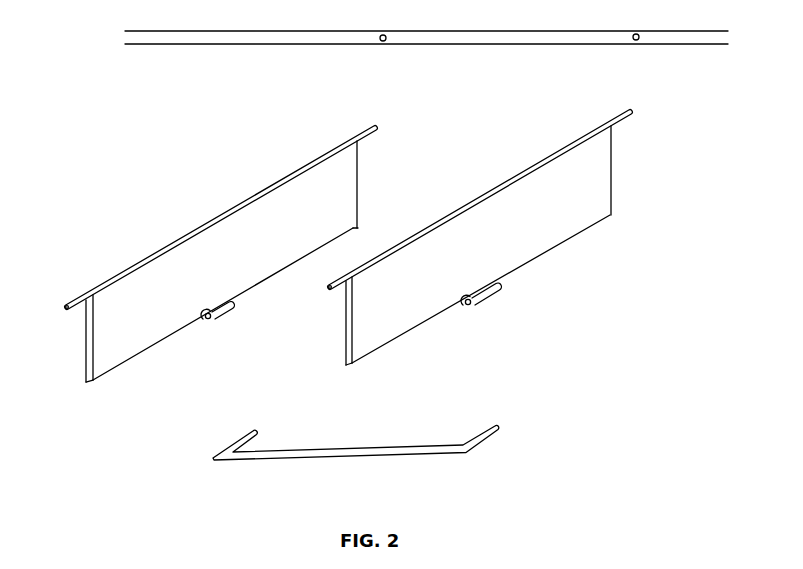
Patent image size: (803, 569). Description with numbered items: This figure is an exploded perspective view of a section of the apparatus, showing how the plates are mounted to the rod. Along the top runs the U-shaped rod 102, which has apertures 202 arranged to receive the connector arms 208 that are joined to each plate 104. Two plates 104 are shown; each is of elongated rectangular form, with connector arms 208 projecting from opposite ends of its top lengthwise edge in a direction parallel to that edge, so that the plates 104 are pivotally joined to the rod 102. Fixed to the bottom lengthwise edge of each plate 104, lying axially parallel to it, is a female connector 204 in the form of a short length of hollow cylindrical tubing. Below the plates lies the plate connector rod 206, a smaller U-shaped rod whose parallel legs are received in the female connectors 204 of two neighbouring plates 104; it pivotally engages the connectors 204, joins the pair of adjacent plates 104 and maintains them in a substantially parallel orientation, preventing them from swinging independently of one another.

The U-shaped rod 102 is at (168, 38).
The plate 104 is at (207, 262).
The aperture 202 is at (380, 42).
The female connector 204 is at (218, 320).
The plate connector rod 206 is at (270, 457).
The connector arm 208 is at (365, 133).